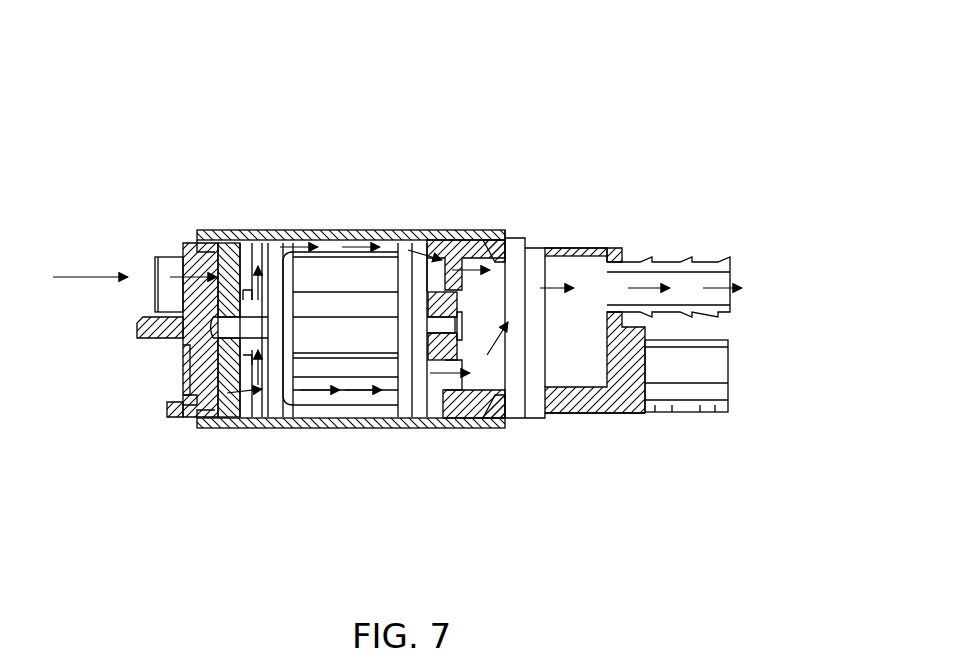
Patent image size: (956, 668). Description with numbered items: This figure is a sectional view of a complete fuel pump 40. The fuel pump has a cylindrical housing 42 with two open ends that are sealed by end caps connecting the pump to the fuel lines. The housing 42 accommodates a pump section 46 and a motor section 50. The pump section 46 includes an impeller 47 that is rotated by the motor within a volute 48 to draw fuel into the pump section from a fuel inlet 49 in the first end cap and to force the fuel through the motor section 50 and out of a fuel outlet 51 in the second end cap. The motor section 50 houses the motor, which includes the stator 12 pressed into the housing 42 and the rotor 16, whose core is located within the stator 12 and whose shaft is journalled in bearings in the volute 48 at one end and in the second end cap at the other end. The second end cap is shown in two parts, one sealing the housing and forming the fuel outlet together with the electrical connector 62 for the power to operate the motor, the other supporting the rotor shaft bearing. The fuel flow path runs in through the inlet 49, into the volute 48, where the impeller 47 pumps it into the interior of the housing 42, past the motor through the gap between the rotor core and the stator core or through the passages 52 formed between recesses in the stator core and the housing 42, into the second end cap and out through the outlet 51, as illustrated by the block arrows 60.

The fuel pump 40 is at (642, 124).
The housing 42 is at (403, 428).
The pump section 46 is at (247, 190).
The impeller 47 is at (220, 413).
The volute 48 is at (257, 420).
The fuel inlet 49 is at (155, 290).
The motor section 50 is at (505, 190).
The fuel outlet 51 is at (710, 252).
The passages 52 is at (80, 277).
The block arrows 60 is at (172, 308).
The electrical connector 62 is at (728, 373).
The stator 12 is at (332, 407).
The rotor 16 is at (264, 405).